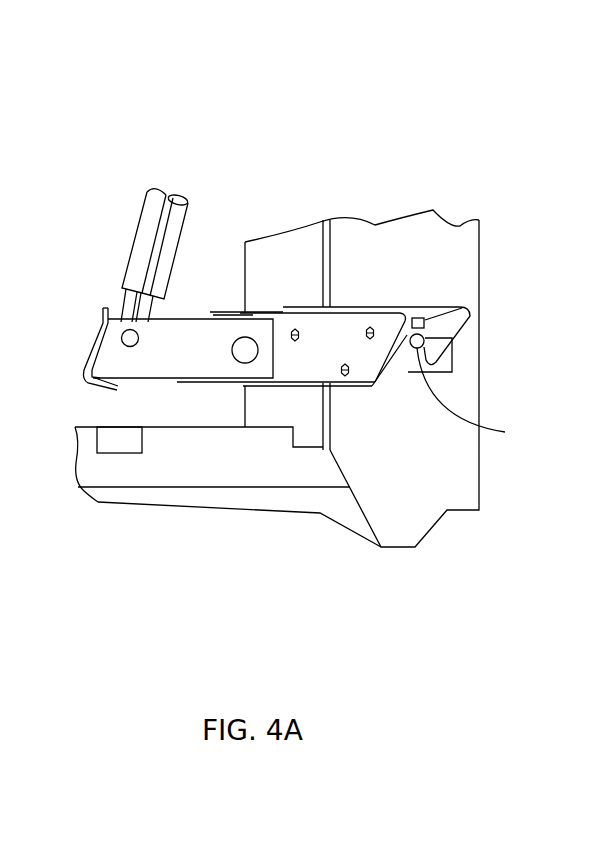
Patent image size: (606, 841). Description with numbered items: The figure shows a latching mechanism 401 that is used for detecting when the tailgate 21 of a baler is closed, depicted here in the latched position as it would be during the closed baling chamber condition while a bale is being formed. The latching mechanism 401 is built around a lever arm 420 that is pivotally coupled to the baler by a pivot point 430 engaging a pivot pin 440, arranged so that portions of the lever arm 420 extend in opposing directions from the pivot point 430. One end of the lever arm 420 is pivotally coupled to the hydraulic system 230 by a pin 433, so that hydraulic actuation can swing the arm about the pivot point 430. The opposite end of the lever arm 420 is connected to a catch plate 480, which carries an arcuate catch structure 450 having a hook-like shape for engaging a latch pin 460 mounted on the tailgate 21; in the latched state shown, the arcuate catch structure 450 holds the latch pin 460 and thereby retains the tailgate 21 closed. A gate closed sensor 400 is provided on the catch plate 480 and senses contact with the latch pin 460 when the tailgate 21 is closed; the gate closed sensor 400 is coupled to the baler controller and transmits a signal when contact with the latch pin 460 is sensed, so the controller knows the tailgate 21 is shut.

The latching mechanism 401 is at (322, 86).
The tailgate 21 is at (415, 515).
The hydraulic system 230 is at (152, 213).
The pivot point 430 is at (248, 338).
The pin 433 is at (124, 335).
The pivot pin 440 is at (245, 353).
The lever arm 420 is at (343, 325).
The gate closed sensor 400 is at (424, 313).
The catch plate 480 is at (412, 306).
The arcuate catch structure 450 is at (424, 340).
The latch pin 460 is at (479, 396).